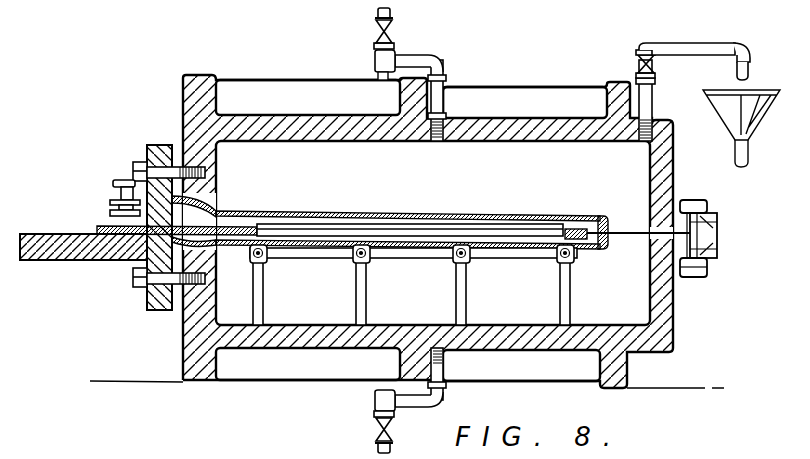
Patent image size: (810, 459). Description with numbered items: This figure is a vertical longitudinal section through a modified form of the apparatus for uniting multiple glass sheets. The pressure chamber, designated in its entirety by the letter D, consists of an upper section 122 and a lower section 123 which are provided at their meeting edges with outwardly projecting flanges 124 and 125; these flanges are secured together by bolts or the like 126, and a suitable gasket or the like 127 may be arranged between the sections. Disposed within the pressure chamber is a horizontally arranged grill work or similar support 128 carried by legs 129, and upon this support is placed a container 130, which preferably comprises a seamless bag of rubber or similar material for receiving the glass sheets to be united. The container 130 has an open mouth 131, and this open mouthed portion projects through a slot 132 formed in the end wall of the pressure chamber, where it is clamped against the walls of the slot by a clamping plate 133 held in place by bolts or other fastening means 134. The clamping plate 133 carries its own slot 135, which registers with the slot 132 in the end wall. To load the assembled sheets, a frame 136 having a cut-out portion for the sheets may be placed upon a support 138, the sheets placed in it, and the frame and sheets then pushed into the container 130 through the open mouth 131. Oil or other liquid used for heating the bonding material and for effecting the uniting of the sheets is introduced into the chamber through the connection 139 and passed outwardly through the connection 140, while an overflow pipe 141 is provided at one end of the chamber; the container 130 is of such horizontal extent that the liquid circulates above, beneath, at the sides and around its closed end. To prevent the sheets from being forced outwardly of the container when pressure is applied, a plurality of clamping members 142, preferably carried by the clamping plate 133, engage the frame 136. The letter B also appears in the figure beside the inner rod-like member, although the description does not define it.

The upper section of pressure chamber 122 is at (308, 115).
The lower section of pressure chamber 123 is at (587, 340).
The outwardly projecting flange 124 is at (716, 208).
The outwardly projecting flange 125 is at (712, 260).
The bolts 126 is at (650, 232).
The gasket 127 is at (718, 235).
The grill work support 128 is at (415, 259).
The legs 129 is at (559, 295).
The container 130 is at (407, 238).
The open mouth 131 is at (227, 212).
The slot 132 is at (206, 246).
The clamping plate 133 is at (213, 184).
The bolts 134 is at (176, 166).
The slot 135 is at (146, 242).
The frame 136 is at (98, 228).
The support 138 is at (56, 250).
The connection 139 is at (444, 80).
The connection 140 is at (443, 372).
The overflow pipe 141 is at (637, 105).
The clamping members 142 is at (112, 188).
The inner rod B is at (391, 231).
The pressure chamber D is at (548, 102).